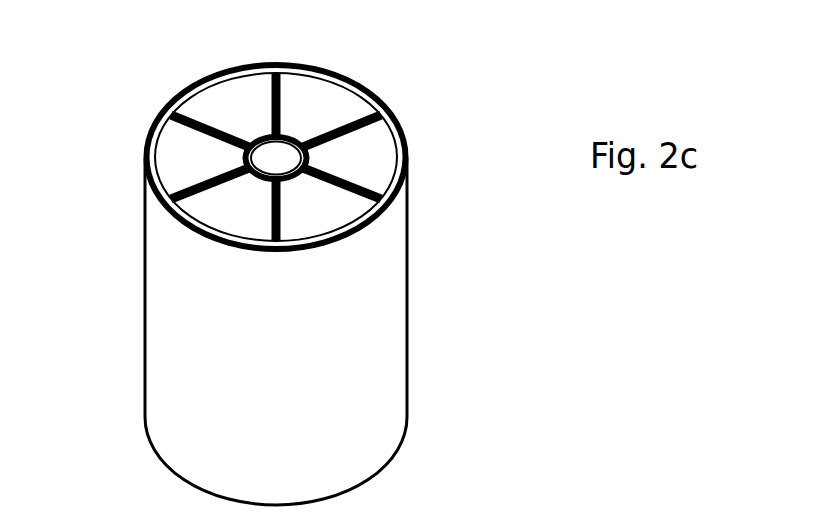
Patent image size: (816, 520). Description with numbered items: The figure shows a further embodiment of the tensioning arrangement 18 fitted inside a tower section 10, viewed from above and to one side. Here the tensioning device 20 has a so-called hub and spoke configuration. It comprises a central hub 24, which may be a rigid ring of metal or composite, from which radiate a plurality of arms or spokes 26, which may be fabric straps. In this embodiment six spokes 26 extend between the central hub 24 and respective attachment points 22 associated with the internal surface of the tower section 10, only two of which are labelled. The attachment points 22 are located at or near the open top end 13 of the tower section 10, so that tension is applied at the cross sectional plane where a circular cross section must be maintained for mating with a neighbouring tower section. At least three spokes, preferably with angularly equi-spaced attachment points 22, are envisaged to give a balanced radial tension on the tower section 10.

The tower section 10 is at (163, 323).
The top end 13 is at (420, 143).
The tensioning arrangement 18 is at (447, 212).
The tensioning device 20 is at (234, 168).
The attachment points 22 is at (355, 104).
The central hub 24 is at (266, 137).
The spokes 26 is at (200, 131).